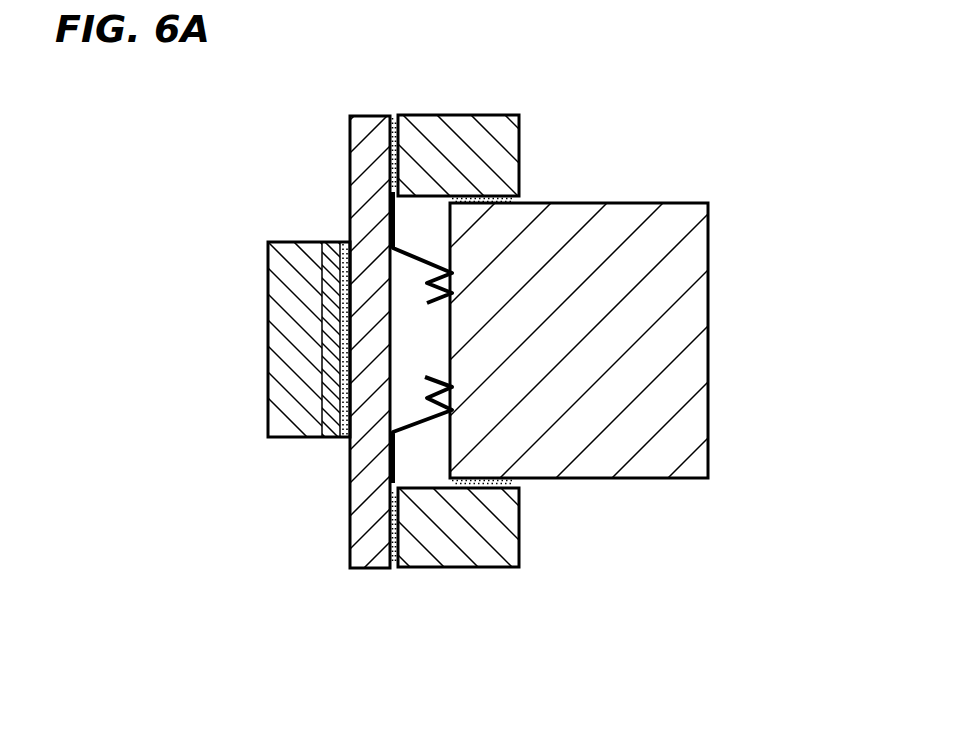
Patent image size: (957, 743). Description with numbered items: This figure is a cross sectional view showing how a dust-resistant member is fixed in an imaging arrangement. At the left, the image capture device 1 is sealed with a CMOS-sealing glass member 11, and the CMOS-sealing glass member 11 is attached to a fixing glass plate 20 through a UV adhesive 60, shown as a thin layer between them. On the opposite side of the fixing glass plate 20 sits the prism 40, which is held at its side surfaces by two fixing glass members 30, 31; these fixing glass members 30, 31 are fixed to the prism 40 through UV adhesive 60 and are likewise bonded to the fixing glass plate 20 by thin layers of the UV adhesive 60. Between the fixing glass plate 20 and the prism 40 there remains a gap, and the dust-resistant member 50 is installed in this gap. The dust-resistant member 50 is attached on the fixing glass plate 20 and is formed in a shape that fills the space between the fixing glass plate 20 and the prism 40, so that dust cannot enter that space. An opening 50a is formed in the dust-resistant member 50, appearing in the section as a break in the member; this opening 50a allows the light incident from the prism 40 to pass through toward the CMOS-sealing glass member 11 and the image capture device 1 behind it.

The image capture device 1 is at (283, 350).
The CMOS-sealing glass member 11 is at (330, 242).
The fixing glass plate 20 is at (362, 560).
The fixing glass member 30 is at (490, 130).
The fixing glass member 31 is at (495, 557).
The prism 40 is at (673, 320).
The dust-resistant member 50 is at (417, 258).
The opening 50a is at (432, 340).
The UV adhesive 60 is at (395, 115).